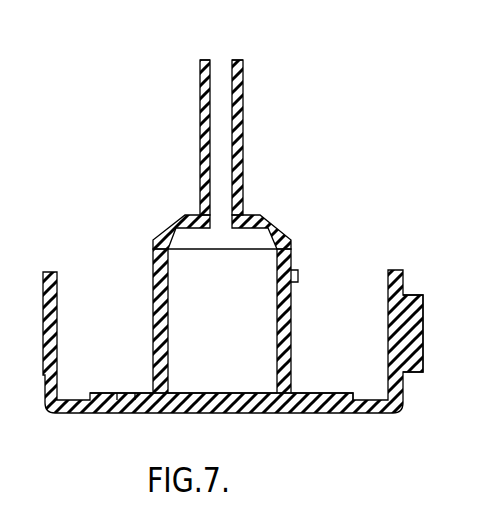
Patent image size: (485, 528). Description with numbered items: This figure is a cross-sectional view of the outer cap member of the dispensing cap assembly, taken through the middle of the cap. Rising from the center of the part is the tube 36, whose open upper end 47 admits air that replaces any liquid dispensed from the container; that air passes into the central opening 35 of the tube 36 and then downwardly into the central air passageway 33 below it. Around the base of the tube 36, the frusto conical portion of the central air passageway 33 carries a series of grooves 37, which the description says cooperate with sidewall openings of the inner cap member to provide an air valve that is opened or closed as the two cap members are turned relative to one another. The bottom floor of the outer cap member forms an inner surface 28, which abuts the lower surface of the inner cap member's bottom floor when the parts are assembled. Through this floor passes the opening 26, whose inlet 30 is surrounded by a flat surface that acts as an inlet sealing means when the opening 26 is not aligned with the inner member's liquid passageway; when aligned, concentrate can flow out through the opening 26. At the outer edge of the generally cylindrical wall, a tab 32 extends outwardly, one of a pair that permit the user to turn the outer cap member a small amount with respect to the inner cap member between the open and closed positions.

The opening 26 is at (133, 393).
The inner surface 28 is at (312, 393).
The inlet 30 is at (252, 321).
The tab 32 is at (415, 322).
The central air passageway 33 is at (277, 312).
The central opening 35 is at (232, 113).
The tube 36 is at (200, 163).
The grooves 37 is at (273, 232).
The open upper end 47 is at (222, 58).